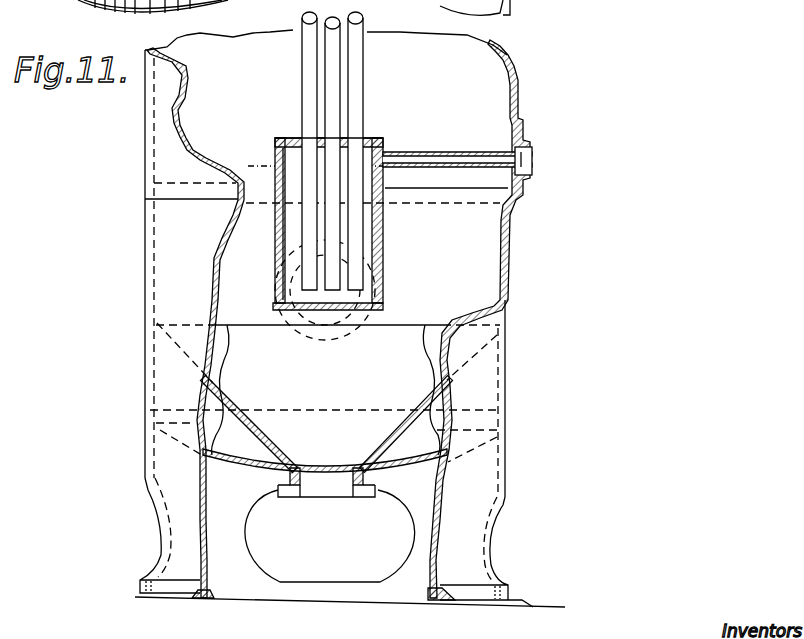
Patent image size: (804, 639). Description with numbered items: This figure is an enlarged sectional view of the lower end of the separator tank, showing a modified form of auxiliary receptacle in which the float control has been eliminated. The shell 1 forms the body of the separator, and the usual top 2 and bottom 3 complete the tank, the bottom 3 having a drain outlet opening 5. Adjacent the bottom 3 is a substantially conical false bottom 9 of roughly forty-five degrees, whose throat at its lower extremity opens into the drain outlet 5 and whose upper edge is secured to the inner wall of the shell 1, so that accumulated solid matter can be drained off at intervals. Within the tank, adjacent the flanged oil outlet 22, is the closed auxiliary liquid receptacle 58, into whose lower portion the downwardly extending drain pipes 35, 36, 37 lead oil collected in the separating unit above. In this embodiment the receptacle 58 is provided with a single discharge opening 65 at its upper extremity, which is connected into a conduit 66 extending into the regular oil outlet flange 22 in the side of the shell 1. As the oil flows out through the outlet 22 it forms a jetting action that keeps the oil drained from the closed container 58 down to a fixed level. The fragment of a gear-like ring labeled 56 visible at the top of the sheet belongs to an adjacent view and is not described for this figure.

The shell 1 is at (512, 8).
The top 2 is at (283, 167).
The bottom 3 is at (407, 476).
The drain outlet opening 5 is at (315, 488).
The conical false bottom 9 is at (423, 382).
The flanged oil outlet 22 is at (531, 150).
The drain pipe 35 is at (302, 63).
The drain pipe 36 is at (330, 89).
The drain pipe 37 is at (356, 72).
The gear ring 56 is at (66, 0).
The auxiliary liquid receptacle 58 is at (274, 241).
The discharge opening 65 is at (390, 152).
The conduit 66 is at (457, 152).